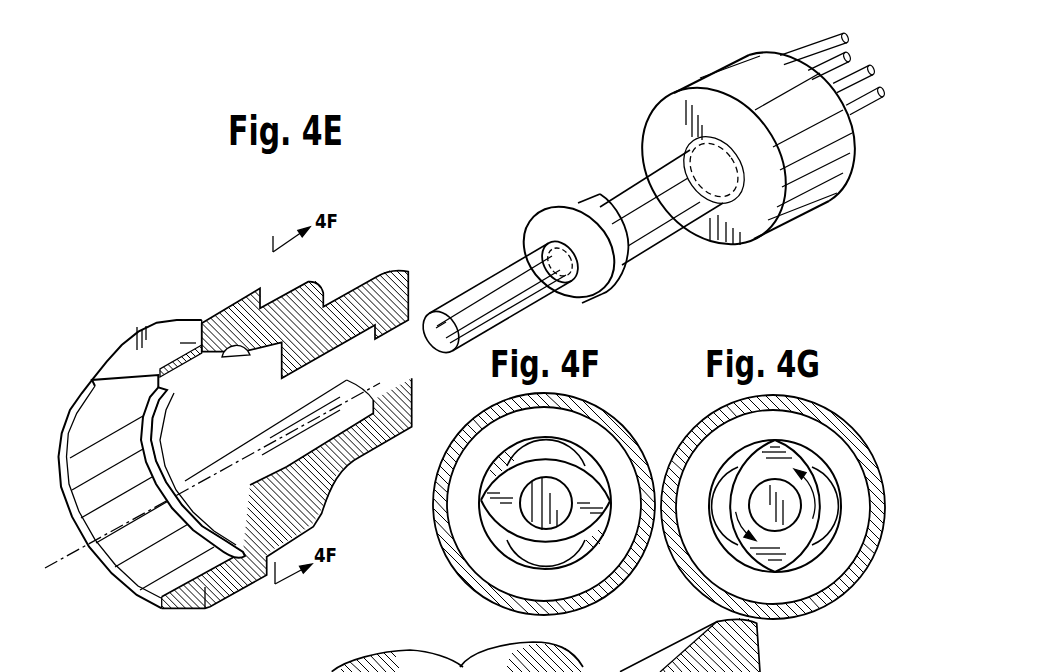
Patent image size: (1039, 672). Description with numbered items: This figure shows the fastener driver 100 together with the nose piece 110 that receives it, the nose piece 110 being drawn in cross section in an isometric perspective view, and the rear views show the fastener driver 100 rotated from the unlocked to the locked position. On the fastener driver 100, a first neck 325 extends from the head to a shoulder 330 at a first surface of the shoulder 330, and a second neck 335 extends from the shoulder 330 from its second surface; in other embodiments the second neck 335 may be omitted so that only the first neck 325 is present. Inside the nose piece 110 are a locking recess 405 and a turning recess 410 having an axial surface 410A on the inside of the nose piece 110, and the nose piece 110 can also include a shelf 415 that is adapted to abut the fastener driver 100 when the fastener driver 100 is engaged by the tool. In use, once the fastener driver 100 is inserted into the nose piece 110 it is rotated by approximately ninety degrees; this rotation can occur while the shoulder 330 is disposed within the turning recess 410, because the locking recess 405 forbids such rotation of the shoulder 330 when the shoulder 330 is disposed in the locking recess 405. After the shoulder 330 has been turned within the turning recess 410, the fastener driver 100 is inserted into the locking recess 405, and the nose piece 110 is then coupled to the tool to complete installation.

In FIG. 4E, the fastener driver 100 is at (630, 112).
In FIG. 4E, the nose piece 110 is at (104, 325).
In FIG. 4E, the first neck 325 is at (636, 175).
In FIG. 4E, the shoulder 330 is at (570, 213).
In FIG. 4F, the shoulder 330 is at (583, 461).
In FIG. 4G, the shoulder 330 is at (785, 457).
In FIG. 4E, the second neck 335 is at (487, 287).
In FIG. 4F, the second neck 335 is at (488, 537).
In FIG. 4G, the second neck 335 is at (760, 515).
In FIG. 4E, the locking recess 405 is at (326, 424).
In FIG. 4F, the locking recess 405 is at (548, 450).
In FIG. 4E, the turning recess 410 is at (210, 448).
In FIG. 4E, the axial surface 410A is at (253, 358).
In FIG. 4E, the shelf 415 is at (380, 308).